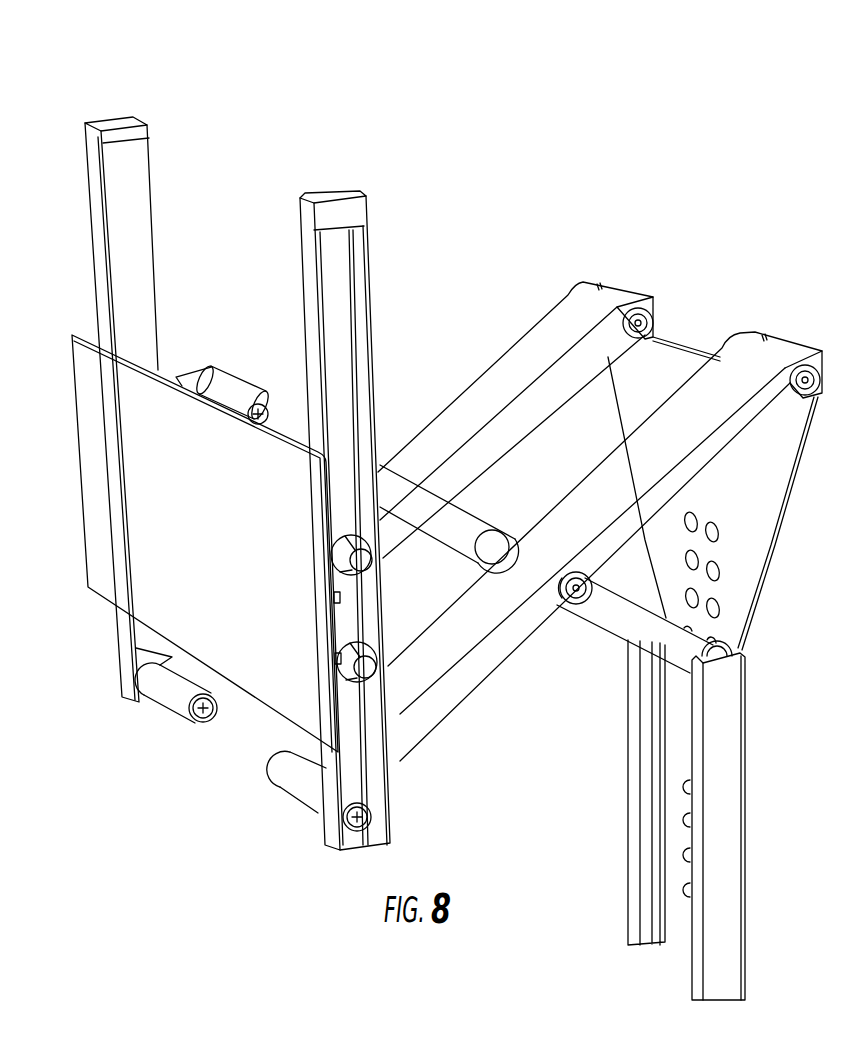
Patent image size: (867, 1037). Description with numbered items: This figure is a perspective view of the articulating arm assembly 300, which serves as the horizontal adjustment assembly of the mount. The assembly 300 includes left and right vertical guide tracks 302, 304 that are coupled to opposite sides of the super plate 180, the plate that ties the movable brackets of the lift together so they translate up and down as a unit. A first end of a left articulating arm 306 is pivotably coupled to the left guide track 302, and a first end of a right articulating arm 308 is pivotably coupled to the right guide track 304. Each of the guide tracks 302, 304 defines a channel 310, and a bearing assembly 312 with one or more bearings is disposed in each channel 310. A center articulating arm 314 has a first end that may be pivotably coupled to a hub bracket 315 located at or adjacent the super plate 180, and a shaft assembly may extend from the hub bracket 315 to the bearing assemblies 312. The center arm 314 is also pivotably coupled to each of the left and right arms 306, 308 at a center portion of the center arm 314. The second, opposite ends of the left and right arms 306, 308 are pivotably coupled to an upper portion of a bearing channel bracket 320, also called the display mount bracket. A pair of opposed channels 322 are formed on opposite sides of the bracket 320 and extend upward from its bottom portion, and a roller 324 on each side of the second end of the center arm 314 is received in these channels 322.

The articulating arm assembly 300 is at (630, 72).
The right vertical guide track 304 is at (119, 108).
The left vertical guide track 302 is at (344, 178).
The hub bracket 315 is at (176, 352).
The super plate 180 is at (88, 488).
The right articulating arm 308 is at (432, 393).
The center articulating arm 314 is at (472, 497).
The bearing assembly 312 is at (377, 618).
The left articulating arm 306 is at (488, 698).
The channel 310 is at (364, 746).
The bearing channel bracket 320 is at (782, 603).
The roller 324 is at (747, 643).
The channel 322 is at (657, 921).